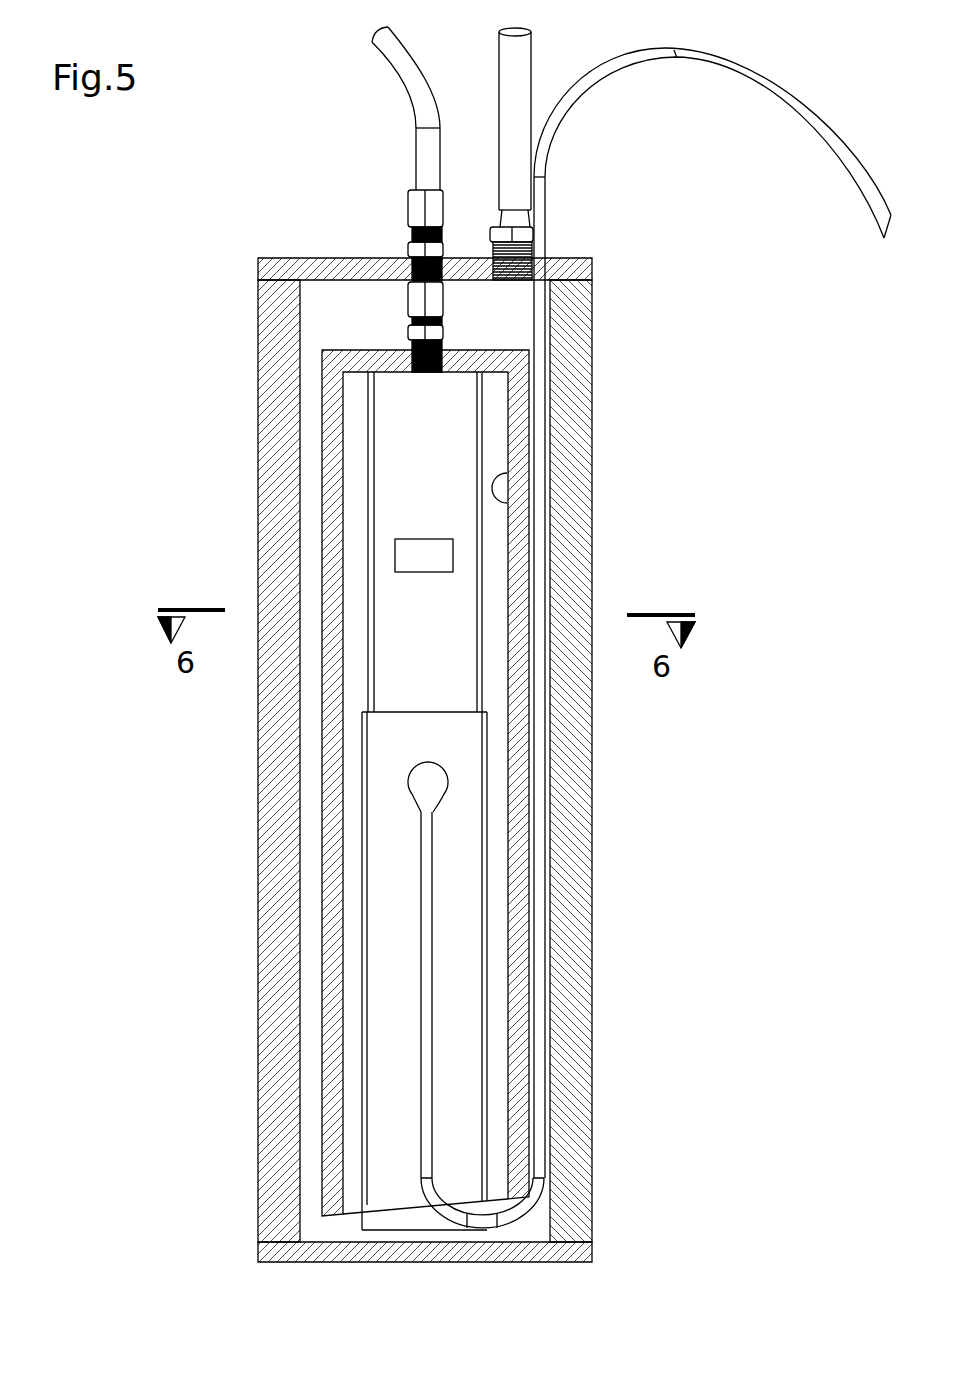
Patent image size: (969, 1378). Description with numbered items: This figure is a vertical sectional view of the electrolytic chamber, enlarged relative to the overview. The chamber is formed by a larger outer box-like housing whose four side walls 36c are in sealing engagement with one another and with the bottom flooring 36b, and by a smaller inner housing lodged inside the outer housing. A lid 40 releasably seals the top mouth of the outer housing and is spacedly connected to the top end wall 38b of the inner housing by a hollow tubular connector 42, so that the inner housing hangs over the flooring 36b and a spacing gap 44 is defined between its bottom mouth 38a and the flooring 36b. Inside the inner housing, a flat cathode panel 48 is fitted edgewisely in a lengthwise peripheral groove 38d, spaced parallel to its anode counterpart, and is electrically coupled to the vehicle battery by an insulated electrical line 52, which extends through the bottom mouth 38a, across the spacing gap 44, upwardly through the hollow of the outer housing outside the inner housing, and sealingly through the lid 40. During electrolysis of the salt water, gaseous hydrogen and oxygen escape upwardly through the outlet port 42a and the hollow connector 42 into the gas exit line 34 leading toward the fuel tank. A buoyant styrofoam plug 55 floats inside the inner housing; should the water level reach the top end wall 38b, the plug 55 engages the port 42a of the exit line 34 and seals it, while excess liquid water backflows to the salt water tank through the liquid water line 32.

The liquid water line 32 is at (520, 85).
The hydrogen-oxygen gas exit line 34 is at (422, 115).
The bottom flooring 36b is at (477, 1253).
The side walls 36c is at (277, 938).
The bottom mouth 38a is at (353, 1202).
The top end wall 38b is at (492, 355).
The peripheral groove 38d is at (503, 502).
The lid 40 is at (333, 268).
The tubular connector 42 is at (420, 295).
The outlet port 42a is at (427, 373).
The spacing gap 44 is at (532, 1233).
The cathode panel 48 is at (467, 812).
The electrical line 52 is at (788, 105).
The styrofoam plug 55 is at (453, 555).